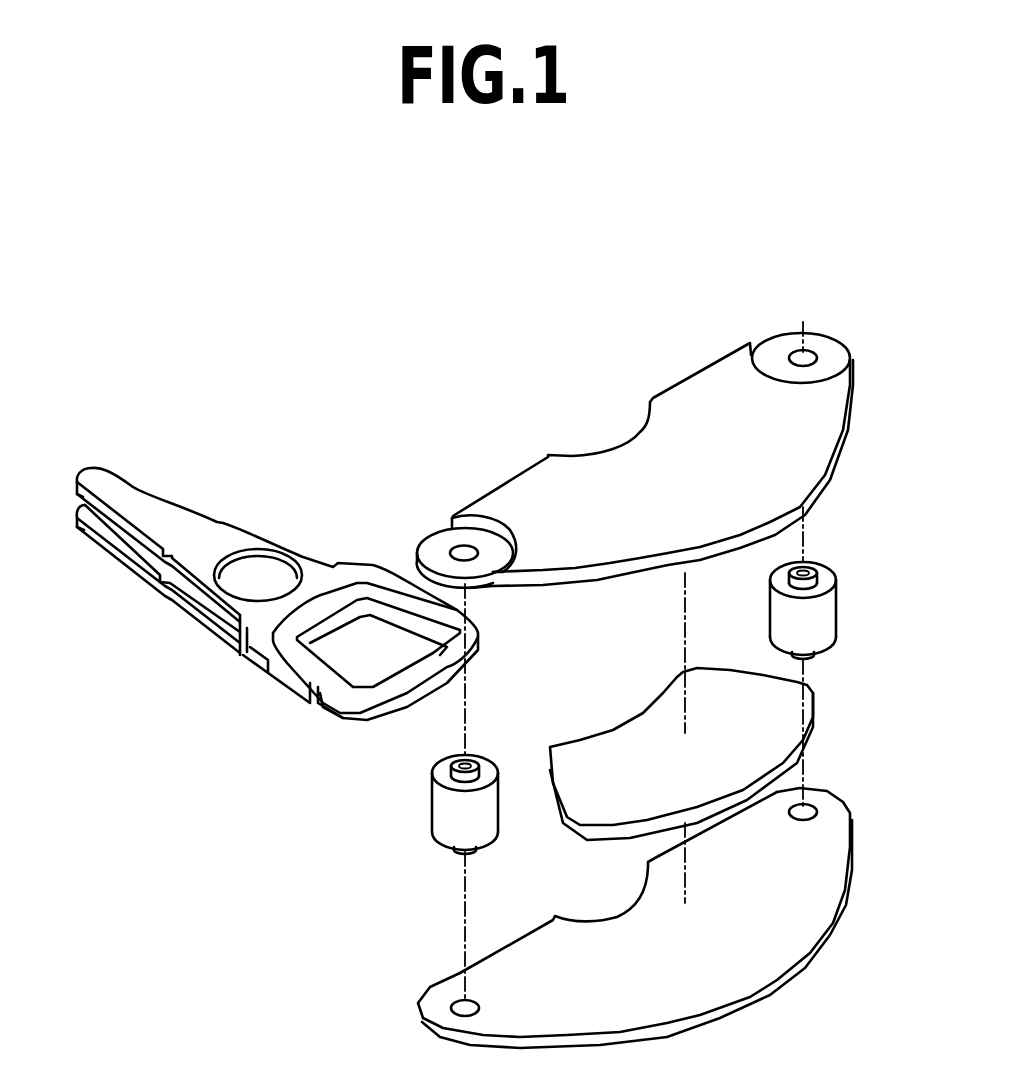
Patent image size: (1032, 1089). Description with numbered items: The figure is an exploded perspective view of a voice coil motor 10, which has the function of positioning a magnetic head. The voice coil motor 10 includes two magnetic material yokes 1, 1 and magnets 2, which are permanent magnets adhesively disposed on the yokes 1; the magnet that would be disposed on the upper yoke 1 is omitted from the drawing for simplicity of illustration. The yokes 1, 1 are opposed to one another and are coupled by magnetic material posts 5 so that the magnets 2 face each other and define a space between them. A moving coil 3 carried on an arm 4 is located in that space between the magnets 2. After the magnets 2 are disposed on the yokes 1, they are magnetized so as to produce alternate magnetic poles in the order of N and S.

The yoke 1 is at (745, 425).
The magnet 2 is at (637, 776).
The moving coil 3 is at (251, 624).
The arm 4 is at (130, 533).
The post 5 is at (812, 620).
The voice coil motor 10 is at (446, 322).